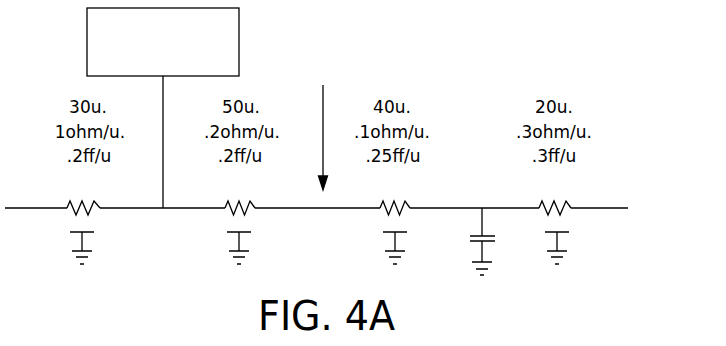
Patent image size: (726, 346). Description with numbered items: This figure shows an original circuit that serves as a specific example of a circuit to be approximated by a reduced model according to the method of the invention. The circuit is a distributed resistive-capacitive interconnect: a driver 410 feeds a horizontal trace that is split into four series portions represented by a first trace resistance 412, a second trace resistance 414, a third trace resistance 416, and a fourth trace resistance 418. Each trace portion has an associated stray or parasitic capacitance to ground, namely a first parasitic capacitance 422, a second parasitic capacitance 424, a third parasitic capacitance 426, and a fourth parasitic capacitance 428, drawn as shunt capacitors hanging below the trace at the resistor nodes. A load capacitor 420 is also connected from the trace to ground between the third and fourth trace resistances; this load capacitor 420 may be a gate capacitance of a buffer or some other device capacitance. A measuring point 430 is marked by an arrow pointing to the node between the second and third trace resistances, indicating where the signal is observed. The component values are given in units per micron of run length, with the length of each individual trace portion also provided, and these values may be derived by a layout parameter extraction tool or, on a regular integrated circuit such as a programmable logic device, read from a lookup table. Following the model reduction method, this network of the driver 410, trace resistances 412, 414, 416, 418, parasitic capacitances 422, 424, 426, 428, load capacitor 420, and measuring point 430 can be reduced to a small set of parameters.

The driver 410 is at (239, 42).
The trace resistance R1 412 is at (78, 202).
The trace resistance R2 414 is at (235, 202).
The trace resistance R3 416 is at (390, 202).
The trace resistance R4 418 is at (553, 202).
The load capacitor C5 420 is at (495, 242).
The stray or parasitic capacitance C1 422 is at (93, 233).
The stray or parasitic capacitance C2 424 is at (250, 233).
The stray or parasitic capacitance C3 426 is at (406, 233).
The stray or parasitic capacitance C4 428 is at (568, 233).
The measuring point 430 is at (339, 62).